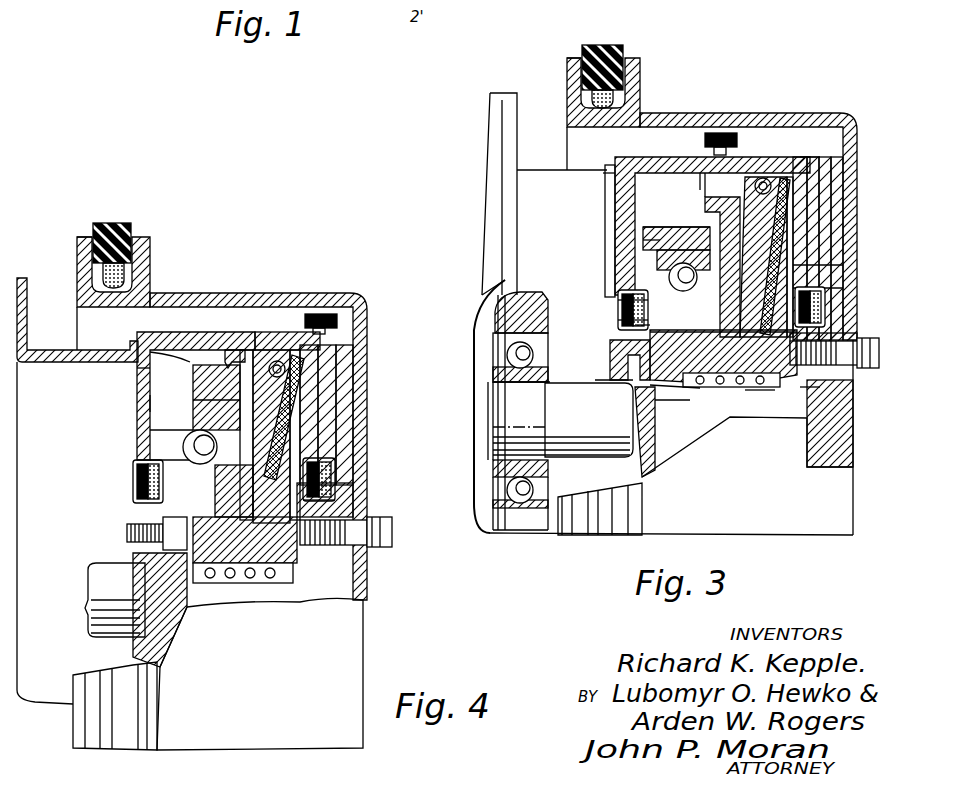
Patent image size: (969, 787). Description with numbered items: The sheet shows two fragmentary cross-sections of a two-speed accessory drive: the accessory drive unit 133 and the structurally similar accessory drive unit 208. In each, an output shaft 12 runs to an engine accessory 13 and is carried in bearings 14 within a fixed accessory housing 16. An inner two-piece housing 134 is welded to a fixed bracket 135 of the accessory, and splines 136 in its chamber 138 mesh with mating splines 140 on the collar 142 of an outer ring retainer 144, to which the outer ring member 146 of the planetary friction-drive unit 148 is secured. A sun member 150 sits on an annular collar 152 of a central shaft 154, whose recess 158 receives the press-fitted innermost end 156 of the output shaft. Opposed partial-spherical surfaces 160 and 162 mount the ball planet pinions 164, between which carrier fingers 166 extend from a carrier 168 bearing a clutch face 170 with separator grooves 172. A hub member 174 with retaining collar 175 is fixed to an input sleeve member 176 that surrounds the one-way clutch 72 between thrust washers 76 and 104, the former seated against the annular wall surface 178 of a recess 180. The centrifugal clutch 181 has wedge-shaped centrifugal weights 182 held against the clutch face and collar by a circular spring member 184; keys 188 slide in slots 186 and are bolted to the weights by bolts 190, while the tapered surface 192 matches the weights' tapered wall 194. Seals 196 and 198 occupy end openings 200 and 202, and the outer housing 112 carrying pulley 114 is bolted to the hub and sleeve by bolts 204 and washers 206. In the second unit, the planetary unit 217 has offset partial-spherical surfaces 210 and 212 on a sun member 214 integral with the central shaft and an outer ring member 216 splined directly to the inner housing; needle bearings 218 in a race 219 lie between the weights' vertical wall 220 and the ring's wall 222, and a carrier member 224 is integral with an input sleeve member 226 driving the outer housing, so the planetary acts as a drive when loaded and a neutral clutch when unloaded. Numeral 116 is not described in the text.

In FIG. 3, the output shaft 12 is at (517, 413).
In FIG. 3, the engine accessory 13 is at (490, 147).
In FIG. 3, the bearings 14 is at (493, 327).
In FIG. 3, the accessory housing 16 is at (483, 297).
In FIG. 4, the one-way clutch 72 is at (240, 580).
In FIG. 3, the one-way clutch 72 is at (757, 400).
In FIG. 3, the thrust washer 76 is at (697, 410).
In FIG. 3, the thrust washer 104 is at (807, 413).
In FIG. 4, the outer housing 112 is at (272, 295).
In FIG. 3, the outer housing 112 is at (838, 113).
In FIG. 4, the pulley 114 is at (148, 258).
In FIG. 3, the pulley 114 is at (630, 67).
In FIG. 4, the seal 116 is at (115, 232).
In FIG. 3, the seal 116 is at (603, 45).
In FIG. 3, the accessory drive unit 133 is at (557, 81).
In FIG. 4, the inner two-piece housing 134 is at (170, 340).
In FIG. 3, the inner two-piece housing 134 is at (647, 160).
In FIG. 4, the fixed bracket 135 is at (30, 337).
In FIG. 3, the fixed bracket 135 is at (603, 173).
In FIG. 4, the splines 136 is at (233, 362).
In FIG. 3, the splines 136 is at (718, 187).
In FIG. 3, the chamber 138 is at (627, 187).
In FIG. 4, the mating splines 140 is at (190, 360).
In FIG. 3, the mating splines 140 is at (703, 160).
In FIG. 3, the collar 142 is at (706, 198).
In FIG. 3, the outer ring retainer 144 is at (653, 220).
In FIG. 3, the outer ring member 146 is at (663, 250).
In FIG. 3, the planetary friction-drive unit 148 is at (650, 232).
In FIG. 3, the sun member 150 is at (637, 330).
In FIG. 3, the annular collar 152 is at (723, 393).
In FIG. 4, the central shaft 154 is at (147, 553).
In FIG. 3, the central shaft 154 is at (628, 430).
In FIG. 4, the innermost end 156 is at (107, 580).
In FIG. 3, the innermost end 156 is at (570, 460).
In FIG. 3, the recess 158 is at (603, 392).
In FIG. 3, the partial-spherical surface 160 is at (669, 276).
In FIG. 3, the partial-spherical surface 162 is at (650, 352).
In FIG. 4, the ball planet pinions 164 is at (165, 462).
In FIG. 3, the ball planet pinions 164 is at (620, 300).
In FIG. 3, the carrier fingers 166 is at (703, 230).
In FIG. 3, the carrier 168 is at (752, 370).
In FIG. 3, the clutch face 170 is at (828, 268).
In FIG. 3, the separator grooves 172 is at (832, 222).
In FIG. 4, the hub member 174 is at (335, 508).
In FIG. 3, the hub member 174 is at (835, 336).
In FIG. 4, the retaining collar 175 is at (300, 356).
In FIG. 3, the retaining collar 175 is at (783, 160).
In FIG. 3, the input sleeve member 176 is at (812, 392).
In FIG. 3, the annular wall surface 178 is at (683, 382).
In FIG. 3, the recess 180 is at (758, 393).
In FIG. 4, the centrifugal clutch 181 is at (301, 437).
In FIG. 3, the centrifugal clutch 181 is at (780, 152).
In FIG. 4, the centrifugal weights 182 is at (273, 407).
In FIG. 3, the centrifugal weights 182 is at (845, 155).
In FIG. 4, the circular spring member 184 is at (313, 316).
In FIG. 3, the circular spring member 184 is at (740, 131).
In FIG. 4, the slots 186 is at (333, 377).
In FIG. 3, the slots 186 is at (835, 178).
In FIG. 4, the rectangular key 188 is at (340, 400).
In FIG. 3, the rectangular key 188 is at (838, 198).
In FIG. 4, the bolt 190 is at (335, 425).
In FIG. 3, the bolt 190 is at (833, 241).
In FIG. 4, the tapered surface 192 is at (245, 514).
In FIG. 3, the tapered surface 192 is at (828, 290).
In FIG. 3, the tapered wall 194 is at (808, 157).
In FIG. 4, the seal 196 is at (330, 492).
In FIG. 3, the seal 196 is at (825, 312).
In FIG. 3, the seal 198 is at (617, 327).
In FIG. 3, the end opening 200 is at (790, 360).
In FIG. 3, the end opening 202 is at (620, 305).
In FIG. 4, the bolts 204 is at (377, 548).
In FIG. 3, the bolts 204 is at (867, 369).
In FIG. 3, the washers 206 is at (845, 425).
In FIG. 4, the accessory drive unit 208 is at (70, 230).
In FIG. 4, the partial-spherical surface 210 is at (213, 463).
In FIG. 4, the partial-spherical surface 212 is at (157, 433).
In FIG. 4, the sun member 214 is at (160, 486).
In FIG. 4, the outer ring member 216 is at (140, 372).
In FIG. 4, the planetary unit 217 is at (176, 400).
In FIG. 4, the needle bearings 218 is at (240, 420).
In FIG. 4, the race 219 is at (240, 372).
In FIG. 4, the vertical wall 220 is at (270, 348).
In FIG. 4, the wall 222 is at (240, 363).
In FIG. 4, the carrier member 224 is at (343, 466).
In FIG. 4, the input sleeve member 226 is at (260, 584).